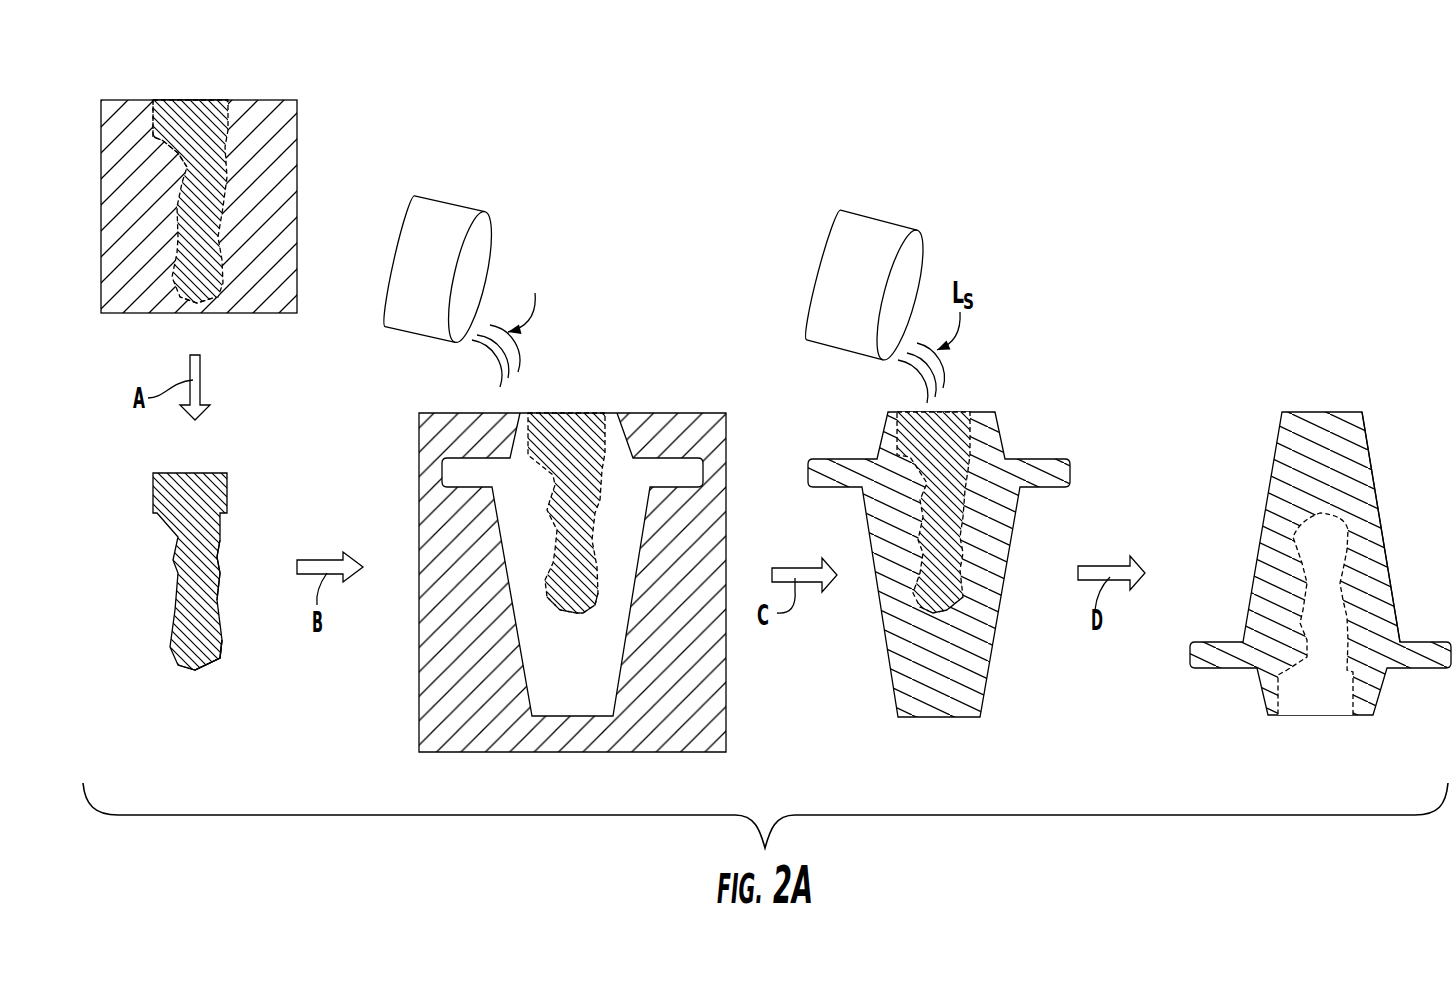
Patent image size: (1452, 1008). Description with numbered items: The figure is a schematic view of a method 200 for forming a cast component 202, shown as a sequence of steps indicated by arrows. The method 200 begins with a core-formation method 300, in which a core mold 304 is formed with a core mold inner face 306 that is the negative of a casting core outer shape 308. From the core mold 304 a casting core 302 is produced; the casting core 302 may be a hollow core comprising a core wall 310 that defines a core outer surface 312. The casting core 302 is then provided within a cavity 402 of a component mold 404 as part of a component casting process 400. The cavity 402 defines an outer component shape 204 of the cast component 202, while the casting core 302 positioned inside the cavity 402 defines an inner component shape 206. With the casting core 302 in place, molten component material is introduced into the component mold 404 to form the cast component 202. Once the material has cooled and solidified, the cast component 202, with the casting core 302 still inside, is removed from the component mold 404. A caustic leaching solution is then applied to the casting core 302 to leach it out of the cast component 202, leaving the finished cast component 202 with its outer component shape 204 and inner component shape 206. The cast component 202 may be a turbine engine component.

The method for forming a cast component 200 is at (1312, 78).
The cast component 202 is at (985, 453).
The outer component shape 204 is at (1382, 512).
The inner component shape 206 is at (1347, 690).
The core-formation method 300 is at (317, 73).
The casting core 302 is at (205, 100).
The core mold 304 is at (272, 148).
The core mold inner face 306 is at (155, 117).
The casting core outer shape 308 is at (230, 562).
The core wall 310 is at (220, 660).
The core outer surface 312 is at (208, 655).
The component casting process 400 is at (735, 160).
The cavity 402 is at (613, 412).
The component mold 404 is at (685, 415).